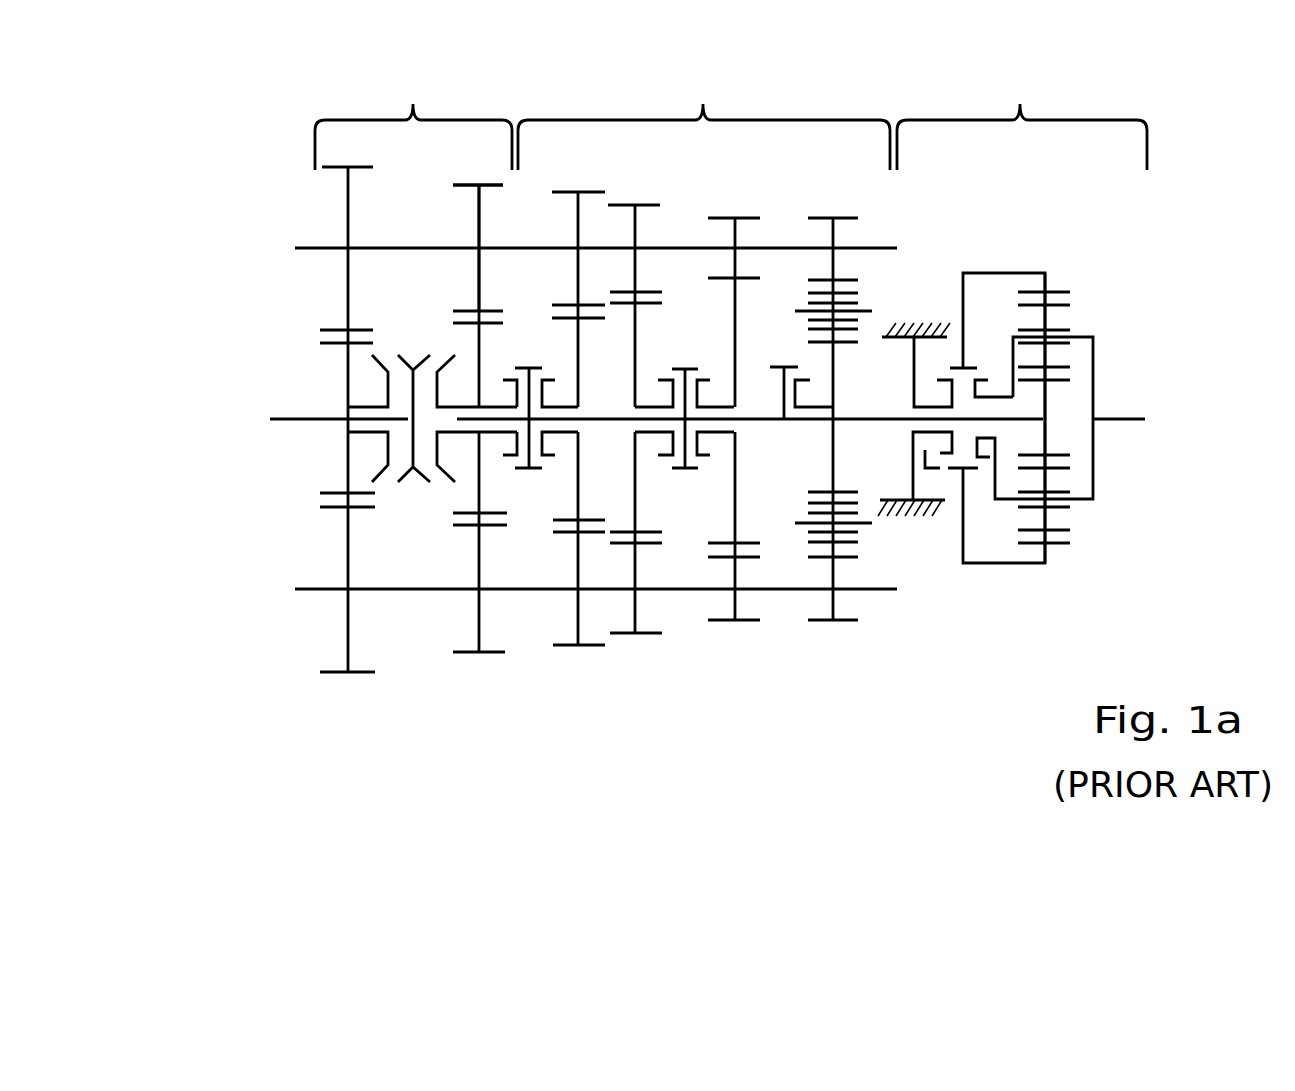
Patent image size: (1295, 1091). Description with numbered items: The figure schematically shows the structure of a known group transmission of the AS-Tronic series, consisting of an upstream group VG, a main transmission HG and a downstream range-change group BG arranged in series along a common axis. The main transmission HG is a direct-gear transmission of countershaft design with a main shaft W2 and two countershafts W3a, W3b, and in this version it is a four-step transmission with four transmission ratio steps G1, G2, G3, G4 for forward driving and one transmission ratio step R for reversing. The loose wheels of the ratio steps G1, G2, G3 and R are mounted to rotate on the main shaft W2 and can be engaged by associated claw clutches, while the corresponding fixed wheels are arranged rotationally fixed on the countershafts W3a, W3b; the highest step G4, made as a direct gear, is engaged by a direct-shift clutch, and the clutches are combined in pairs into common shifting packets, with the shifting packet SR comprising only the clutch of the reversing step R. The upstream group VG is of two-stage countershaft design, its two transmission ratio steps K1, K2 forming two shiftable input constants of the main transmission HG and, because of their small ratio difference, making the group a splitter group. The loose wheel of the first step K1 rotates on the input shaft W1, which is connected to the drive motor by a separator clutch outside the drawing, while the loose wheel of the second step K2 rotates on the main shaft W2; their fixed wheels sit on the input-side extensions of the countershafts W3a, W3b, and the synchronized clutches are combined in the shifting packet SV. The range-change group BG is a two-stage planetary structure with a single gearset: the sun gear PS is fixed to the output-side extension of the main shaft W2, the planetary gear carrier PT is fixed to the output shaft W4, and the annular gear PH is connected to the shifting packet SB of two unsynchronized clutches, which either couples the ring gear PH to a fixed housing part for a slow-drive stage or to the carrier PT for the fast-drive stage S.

The upstream group VG is at (413, 121).
The main transmission HG is at (704, 121).
The range-change group BG is at (1022, 121).
The first transmission ratio step K1 is at (349, 419).
The second transmission ratio step K2 is at (477, 418).
The shifting packet SV is at (413, 403).
The transmission ratio step G4 is at (487, 248).
The transmission ratio step G3 is at (578, 403).
The transmission ratio step G2 is at (635, 403).
The transmission ratio step G1 is at (734, 404).
The transmission ratio step R is at (833, 403).
The shifting packet SR is at (800, 377).
The shifting packet SB is at (945, 419).
The annular gear PH is at (1003, 273).
The planetary gear carrier PT is at (1087, 337).
The sun gear PS is at (1045, 408).
The fast-drive stage S is at (1035, 421).
The input shaft W1 is at (322, 419).
The main shaft W2 is at (608, 419).
The countershaft W3a is at (322, 248).
The countershaft W3b is at (322, 589).
The output shaft W4 is at (1110, 420).